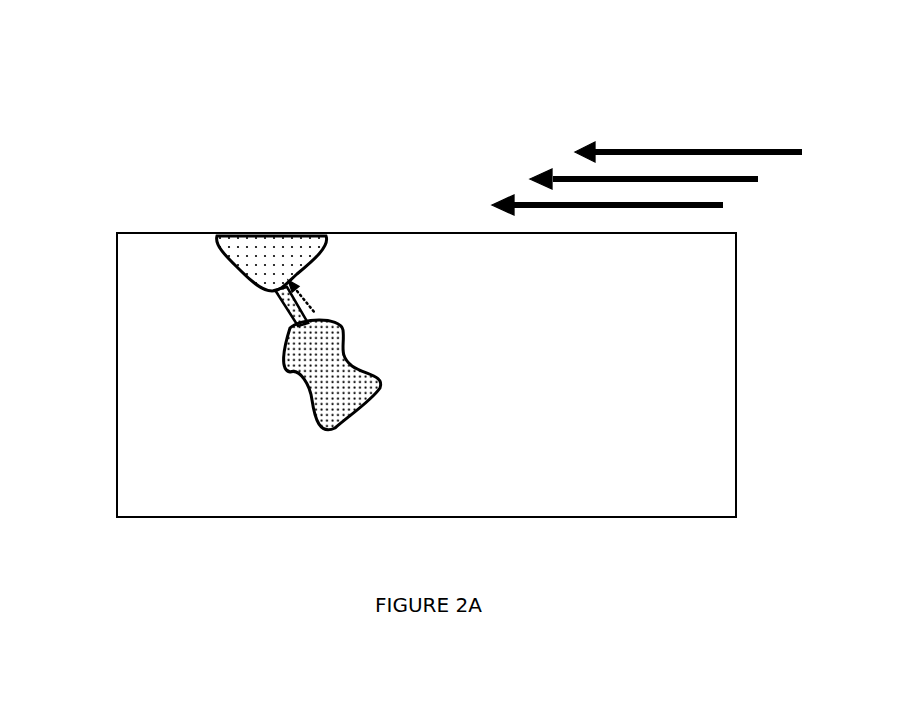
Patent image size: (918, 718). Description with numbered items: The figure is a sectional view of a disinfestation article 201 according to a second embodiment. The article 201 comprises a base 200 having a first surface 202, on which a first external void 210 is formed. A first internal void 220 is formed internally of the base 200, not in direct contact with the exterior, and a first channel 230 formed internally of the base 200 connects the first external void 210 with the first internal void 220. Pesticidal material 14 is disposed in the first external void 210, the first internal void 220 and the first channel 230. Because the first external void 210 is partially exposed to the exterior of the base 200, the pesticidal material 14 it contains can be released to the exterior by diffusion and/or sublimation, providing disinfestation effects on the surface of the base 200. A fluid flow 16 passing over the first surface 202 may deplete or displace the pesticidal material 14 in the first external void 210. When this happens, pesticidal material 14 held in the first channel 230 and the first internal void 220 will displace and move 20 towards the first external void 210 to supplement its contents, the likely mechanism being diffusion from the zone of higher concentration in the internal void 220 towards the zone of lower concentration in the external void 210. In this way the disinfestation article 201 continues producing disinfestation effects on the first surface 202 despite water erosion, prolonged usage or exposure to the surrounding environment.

The disinfestation article 201 is at (170, 92).
The base 200 is at (165, 250).
The first surface 202 is at (460, 232).
The fluid flow 16 is at (655, 149).
The first external void 210 is at (252, 236).
The first internal void 220 is at (325, 407).
The first channel 230 is at (290, 309).
The movement of pesticidal material 20 is at (298, 304).
The pesticidal material 14 is at (197, 355).